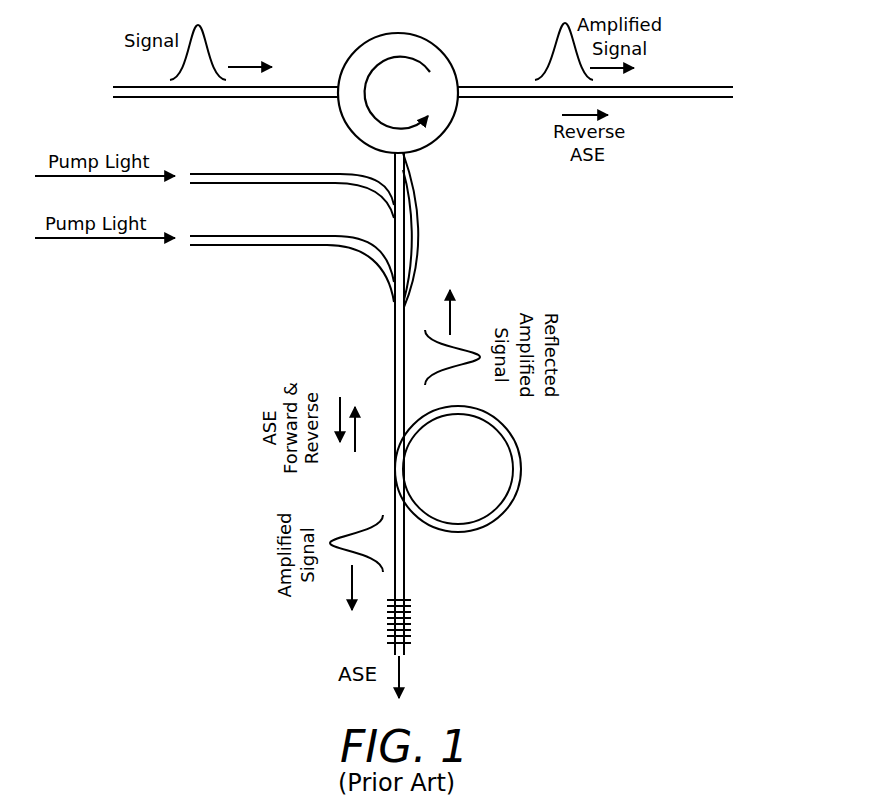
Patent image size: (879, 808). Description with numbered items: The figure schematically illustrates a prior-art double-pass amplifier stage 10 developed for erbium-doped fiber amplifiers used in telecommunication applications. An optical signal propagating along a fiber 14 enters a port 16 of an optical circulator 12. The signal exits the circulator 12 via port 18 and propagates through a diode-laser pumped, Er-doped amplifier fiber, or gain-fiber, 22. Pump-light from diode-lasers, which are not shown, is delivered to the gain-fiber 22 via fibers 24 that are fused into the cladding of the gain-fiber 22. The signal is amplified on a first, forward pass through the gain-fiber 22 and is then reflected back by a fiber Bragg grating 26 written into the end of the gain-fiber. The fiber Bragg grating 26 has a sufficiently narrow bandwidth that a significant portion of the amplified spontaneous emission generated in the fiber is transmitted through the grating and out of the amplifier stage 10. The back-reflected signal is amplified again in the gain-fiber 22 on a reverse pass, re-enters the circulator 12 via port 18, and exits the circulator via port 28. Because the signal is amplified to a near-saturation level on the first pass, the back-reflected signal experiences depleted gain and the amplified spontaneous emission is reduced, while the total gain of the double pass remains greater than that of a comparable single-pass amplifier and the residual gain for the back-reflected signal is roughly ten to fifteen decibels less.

The double-pass amplifier stage 10 is at (690, 607).
The optical circulator 12 is at (452, 140).
The fiber 14 is at (277, 92).
The port 16 is at (340, 88).
The port 18 is at (400, 153).
The amplifier fiber 22 is at (388, 350).
The fibers 24 is at (233, 178).
The fiber Bragg grating 26 is at (411, 630).
The port 28 is at (458, 88).